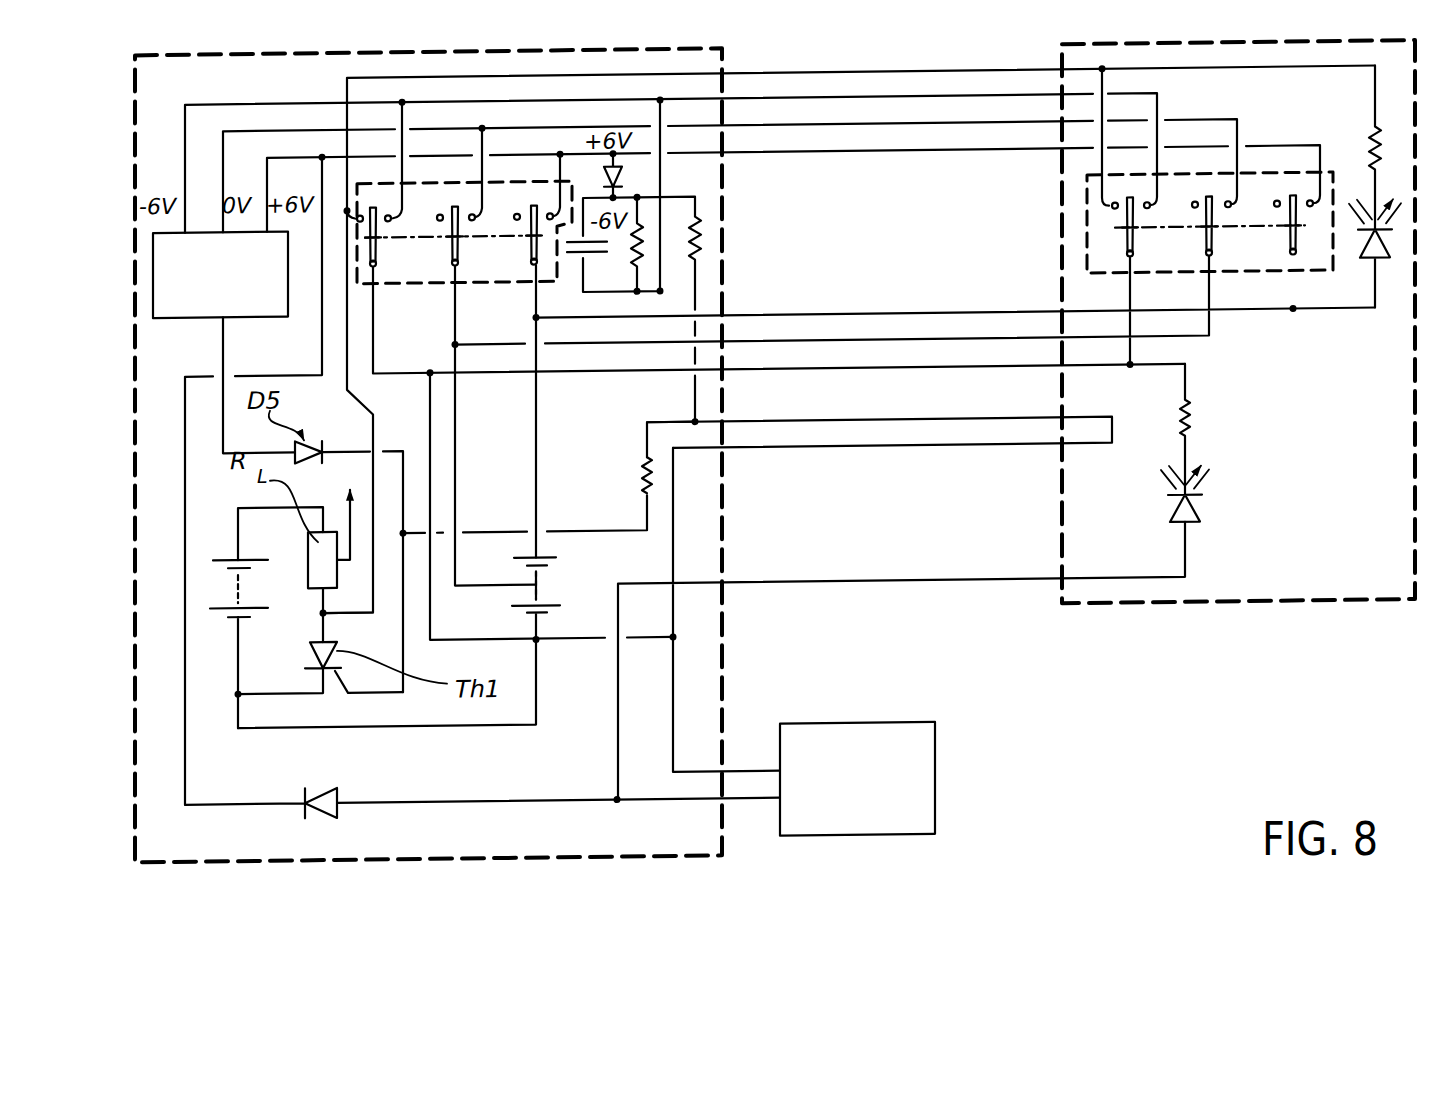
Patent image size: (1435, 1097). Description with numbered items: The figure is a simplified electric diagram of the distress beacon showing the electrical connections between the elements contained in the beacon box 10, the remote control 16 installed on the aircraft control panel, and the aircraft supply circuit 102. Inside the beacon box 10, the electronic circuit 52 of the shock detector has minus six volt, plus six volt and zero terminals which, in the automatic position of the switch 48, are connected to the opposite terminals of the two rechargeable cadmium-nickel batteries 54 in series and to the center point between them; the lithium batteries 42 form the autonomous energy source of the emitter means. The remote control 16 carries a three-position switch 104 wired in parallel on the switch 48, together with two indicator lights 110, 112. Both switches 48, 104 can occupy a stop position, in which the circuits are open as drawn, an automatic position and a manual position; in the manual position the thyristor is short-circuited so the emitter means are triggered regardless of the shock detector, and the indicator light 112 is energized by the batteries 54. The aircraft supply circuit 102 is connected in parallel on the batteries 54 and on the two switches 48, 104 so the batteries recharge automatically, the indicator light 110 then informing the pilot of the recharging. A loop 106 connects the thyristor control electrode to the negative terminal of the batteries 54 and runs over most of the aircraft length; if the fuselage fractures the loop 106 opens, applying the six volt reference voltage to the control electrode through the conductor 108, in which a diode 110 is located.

The beacon box 10 is at (133, 96).
The remote control 16 is at (1104, 619).
The electronic circuit 52 is at (152, 259).
The switch 48 is at (420, 290).
The three-position switch 104 is at (1086, 222).
The indicator light 110 is at (620, 184).
The conductor 108 is at (697, 292).
The indicator light 112 is at (1382, 274).
The loop 106 is at (778, 430).
The rechargeable cadmium-nickel batteries 54 is at (556, 560).
The lithium batteries 42 is at (219, 556).
The aircraft supply circuit 102 is at (935, 801).